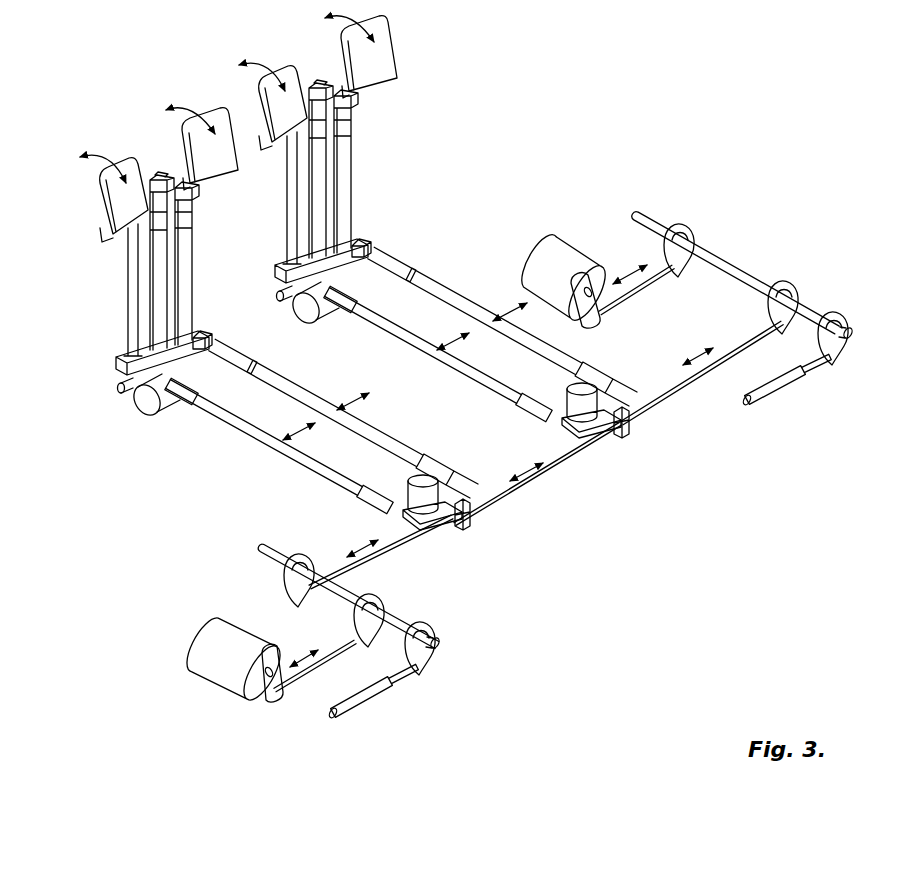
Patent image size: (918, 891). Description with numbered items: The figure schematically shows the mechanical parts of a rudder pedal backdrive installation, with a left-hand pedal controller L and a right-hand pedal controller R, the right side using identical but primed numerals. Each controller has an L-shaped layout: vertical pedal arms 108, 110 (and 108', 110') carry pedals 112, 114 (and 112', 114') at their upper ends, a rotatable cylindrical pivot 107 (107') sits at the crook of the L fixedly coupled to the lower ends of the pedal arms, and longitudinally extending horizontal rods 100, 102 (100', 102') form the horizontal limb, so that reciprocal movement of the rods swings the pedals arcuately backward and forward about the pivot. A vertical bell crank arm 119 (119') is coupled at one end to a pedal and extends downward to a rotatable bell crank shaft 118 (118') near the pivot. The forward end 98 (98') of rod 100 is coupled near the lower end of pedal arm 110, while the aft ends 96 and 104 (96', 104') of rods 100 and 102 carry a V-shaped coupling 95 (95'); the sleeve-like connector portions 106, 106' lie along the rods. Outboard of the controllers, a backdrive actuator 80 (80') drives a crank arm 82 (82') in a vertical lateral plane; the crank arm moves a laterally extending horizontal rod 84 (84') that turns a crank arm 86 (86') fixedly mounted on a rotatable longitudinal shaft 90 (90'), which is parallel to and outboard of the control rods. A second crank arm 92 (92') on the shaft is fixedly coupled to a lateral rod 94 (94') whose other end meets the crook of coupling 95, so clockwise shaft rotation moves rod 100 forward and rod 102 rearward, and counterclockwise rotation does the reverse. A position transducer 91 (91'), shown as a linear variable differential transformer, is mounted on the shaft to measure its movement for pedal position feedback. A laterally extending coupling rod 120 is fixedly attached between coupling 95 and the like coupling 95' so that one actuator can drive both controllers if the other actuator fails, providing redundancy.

The backdrive actuator 80 is at (211, 668).
The backdrive actuator 80' is at (563, 243).
The crank arm 82 is at (296, 701).
The crank arm 82' is at (618, 312).
The laterally extending horizontal rod 84 is at (300, 643).
The laterally extending horizontal rod 84' is at (658, 297).
The crank arm 86 is at (392, 615).
The crank arm 86' is at (800, 290).
The horizontal shaft 90 is at (445, 638).
The horizontal shaft 90' is at (851, 323).
The position transducer 91 is at (434, 691).
The position transducer 91' is at (791, 402).
The second crank arm 92 is at (257, 580).
The second crank arm 92' is at (701, 224).
The laterally extending horizontal rod 94 is at (355, 581).
The laterally extending horizontal rod 94' is at (730, 321).
The V-shaped coupling 95 is at (490, 542).
The V-shaped coupling 95' is at (651, 452).
The aft end of rod 100 96 is at (453, 486).
The aft end of rod 100' 96' is at (614, 395).
The forward end of rod 100 98 is at (232, 330).
The forward end of rod 100' 98' is at (390, 238).
The longitudinal horizontal rod 100 is at (343, 418).
The longitudinal horizontal rod 100' is at (502, 324).
The longitudinal horizontal rod 102 is at (264, 439).
The longitudinal horizontal rod 102' is at (423, 346).
The aft end of rod 102 104 is at (351, 518).
The aft end of rod 102' 104' is at (508, 415).
The sleeve 106 is at (169, 424).
The sleeve 106' is at (331, 328).
The cylindrical pivot 107 is at (121, 410).
The cylindrical pivot 107' is at (297, 320).
The pedal arm 108 is at (113, 261).
The pedal arm 108' is at (281, 169).
The pedal arm 110 is at (213, 263).
The pedal arm 110' is at (379, 171).
The pedal 112 is at (165, 147).
The pedal 112' is at (318, 56).
The pedal 114 is at (85, 198).
The pedal 114' is at (242, 106).
The bell crank shaft 118 is at (125, 369).
The bell crank shaft 118' is at (292, 271).
The bell crank arm 119 is at (97, 290).
The bell crank arm 119' is at (254, 198).
The coupling rod 120 is at (527, 497).
The left-hand pedal controller L is at (607, 637).
The right-hand pedal controller R is at (766, 512).